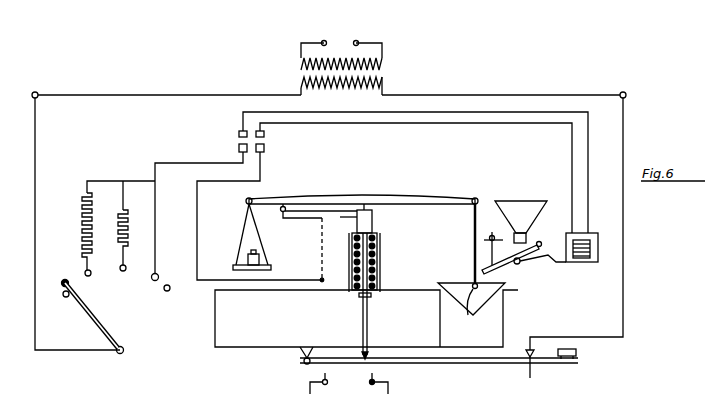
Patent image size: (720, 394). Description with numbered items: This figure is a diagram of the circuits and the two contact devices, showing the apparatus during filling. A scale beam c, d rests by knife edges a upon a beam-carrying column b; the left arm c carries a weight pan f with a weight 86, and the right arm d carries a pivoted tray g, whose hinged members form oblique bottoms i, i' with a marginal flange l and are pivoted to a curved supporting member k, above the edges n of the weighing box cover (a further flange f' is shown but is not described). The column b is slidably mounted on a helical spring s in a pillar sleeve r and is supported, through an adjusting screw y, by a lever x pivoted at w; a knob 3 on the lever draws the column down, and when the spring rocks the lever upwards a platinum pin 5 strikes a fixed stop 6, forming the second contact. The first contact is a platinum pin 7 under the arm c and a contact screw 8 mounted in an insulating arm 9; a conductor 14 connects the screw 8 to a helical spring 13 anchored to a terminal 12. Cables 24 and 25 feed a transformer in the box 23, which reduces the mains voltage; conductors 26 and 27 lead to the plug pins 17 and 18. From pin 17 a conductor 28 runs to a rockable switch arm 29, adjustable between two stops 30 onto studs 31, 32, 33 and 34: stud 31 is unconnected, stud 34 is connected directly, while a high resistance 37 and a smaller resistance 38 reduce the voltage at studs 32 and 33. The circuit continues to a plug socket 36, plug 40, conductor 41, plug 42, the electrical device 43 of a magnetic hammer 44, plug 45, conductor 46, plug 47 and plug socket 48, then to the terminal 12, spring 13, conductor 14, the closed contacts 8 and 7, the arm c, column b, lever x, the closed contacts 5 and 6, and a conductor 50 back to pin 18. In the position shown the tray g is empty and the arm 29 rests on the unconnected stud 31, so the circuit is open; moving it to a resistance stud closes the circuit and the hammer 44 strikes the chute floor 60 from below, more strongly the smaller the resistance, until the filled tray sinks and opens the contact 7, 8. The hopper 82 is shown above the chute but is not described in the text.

The knob 3 is at (576, 352).
The platinum pin 5 is at (534, 373).
The fixed stop 6 is at (527, 352).
The platinum pin 7 is at (290, 197).
The contact screw 8 is at (281, 211).
The insulating arm 9 is at (340, 217).
The terminal 12 is at (319, 278).
The helical spring 13 is at (321, 252).
The conductor 14 is at (302, 227).
The plug pin 17 is at (38, 93).
The plug pin 18 is at (626, 93).
The box 23 is at (330, 69).
The cable 24 is at (324, 40).
The cable 25 is at (356, 40).
The conductor 26 is at (188, 95).
The conductor 27 is at (492, 95).
The conductor 28 is at (35, 184).
The rockable switch arm 29 is at (108, 335).
The stops 30 is at (65, 297).
The stud 31 is at (63, 280).
The stud 32 is at (89, 276).
The stud 33 is at (124, 271).
The stud 34 is at (158, 273).
The plug socket 36 is at (239, 148).
The high resistance 37 is at (82, 228).
The resistance 38 is at (128, 222).
The plug 40 is at (239, 134).
The conductor 41 is at (352, 112).
The plug 42 is at (590, 233).
The electrical device 43 is at (590, 250).
The magnetic hammer 44 is at (556, 262).
The plug 45 is at (547, 230).
The conductor 46 is at (418, 123).
The plug 47 is at (264, 134).
The plug socket 48 is at (264, 148).
The conductor 50 is at (623, 280).
The chute floor 60 is at (507, 268).
The hopper 82 is at (516, 206).
The weight 86 is at (247, 248).
The knife edges a is at (364, 196).
The beam-carrying column b is at (372, 222).
The left arm c is at (322, 196).
The right arm d is at (412, 196).
The weight pan f is at (255, 240).
The tray edge f' is at (433, 271).
The pivoted tray g is at (471, 288).
The oblique bottom i is at (484, 315).
The oblique bottom i' is at (449, 315).
The curved supporting member k is at (472, 232).
The marginal flange l is at (503, 283).
The edges n is at (440, 291).
The pillar sleeve r is at (380, 258).
The helical spring s is at (352, 258).
The pivot w is at (304, 362).
The lever x is at (466, 364).
The adjusting screw y is at (366, 356).